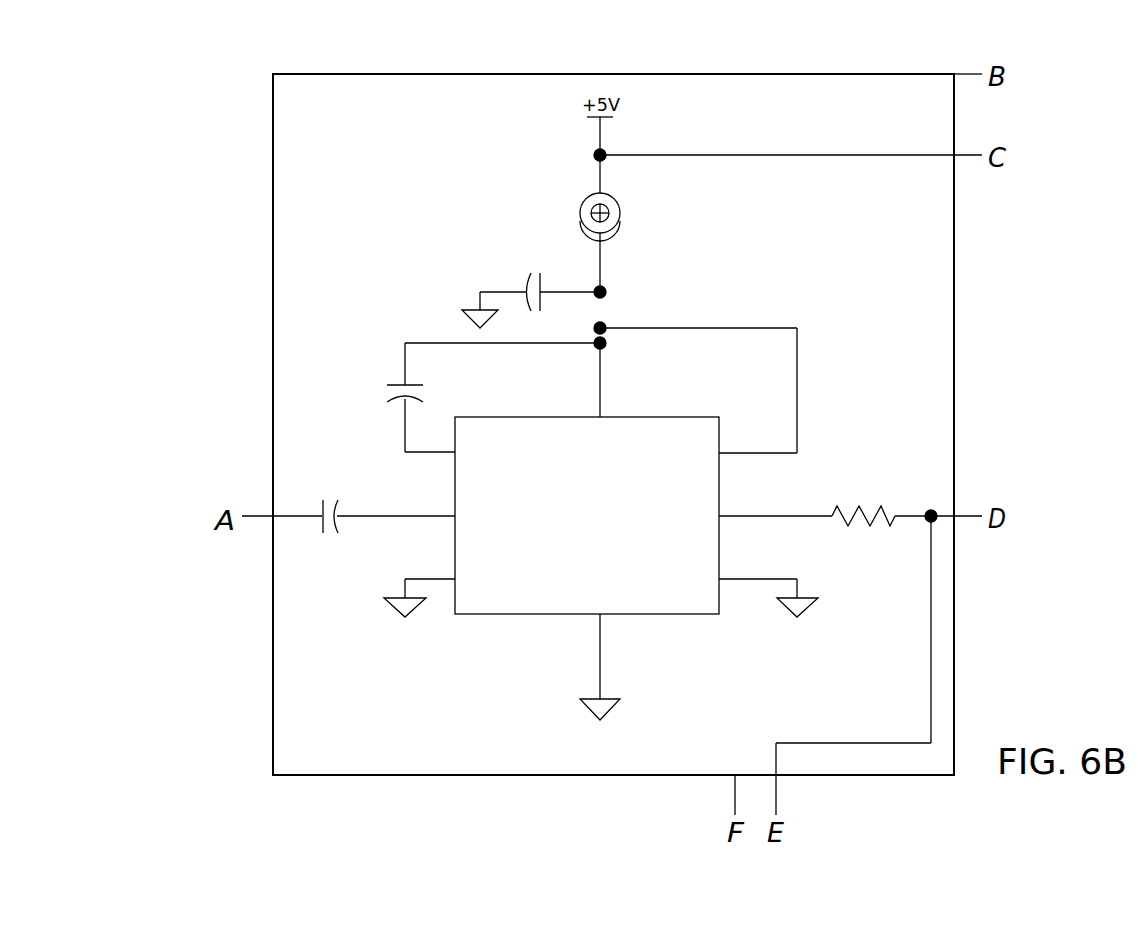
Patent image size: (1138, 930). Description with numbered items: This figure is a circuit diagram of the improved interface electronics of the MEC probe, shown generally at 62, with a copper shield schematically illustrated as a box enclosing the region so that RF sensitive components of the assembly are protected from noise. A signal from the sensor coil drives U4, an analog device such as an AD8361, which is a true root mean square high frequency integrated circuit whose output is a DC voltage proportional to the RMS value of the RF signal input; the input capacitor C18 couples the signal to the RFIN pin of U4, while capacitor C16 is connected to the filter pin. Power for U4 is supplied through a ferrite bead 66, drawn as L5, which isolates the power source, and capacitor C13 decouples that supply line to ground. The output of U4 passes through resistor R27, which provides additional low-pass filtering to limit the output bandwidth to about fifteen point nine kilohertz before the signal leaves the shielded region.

The interface electronics 62 is at (297, 153).
The ferrite bead 66 is at (657, 152).
The ferrite bead L5 is at (683, 239).
The analog device U4 is at (601, 531).
The capacitor C13 is at (523, 267).
The capacitor C16 is at (439, 397).
The capacitor C18 is at (348, 519).
The resistor R27 is at (850, 494).